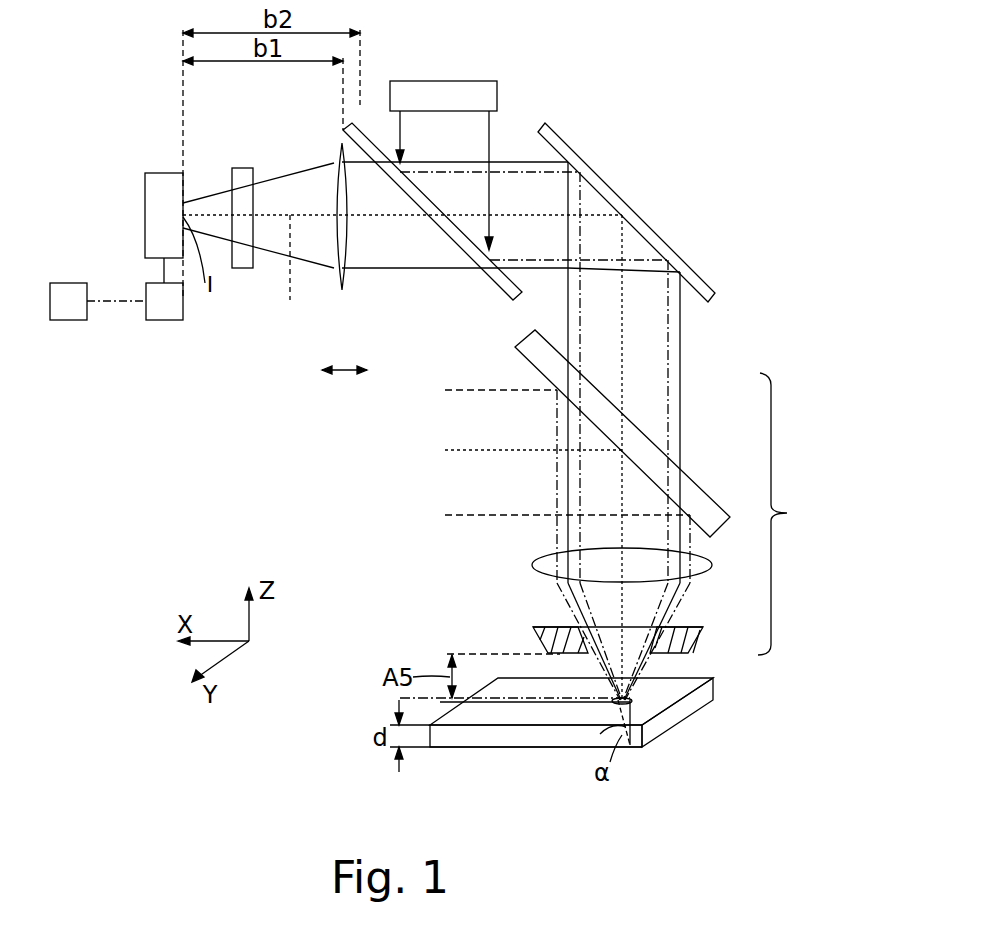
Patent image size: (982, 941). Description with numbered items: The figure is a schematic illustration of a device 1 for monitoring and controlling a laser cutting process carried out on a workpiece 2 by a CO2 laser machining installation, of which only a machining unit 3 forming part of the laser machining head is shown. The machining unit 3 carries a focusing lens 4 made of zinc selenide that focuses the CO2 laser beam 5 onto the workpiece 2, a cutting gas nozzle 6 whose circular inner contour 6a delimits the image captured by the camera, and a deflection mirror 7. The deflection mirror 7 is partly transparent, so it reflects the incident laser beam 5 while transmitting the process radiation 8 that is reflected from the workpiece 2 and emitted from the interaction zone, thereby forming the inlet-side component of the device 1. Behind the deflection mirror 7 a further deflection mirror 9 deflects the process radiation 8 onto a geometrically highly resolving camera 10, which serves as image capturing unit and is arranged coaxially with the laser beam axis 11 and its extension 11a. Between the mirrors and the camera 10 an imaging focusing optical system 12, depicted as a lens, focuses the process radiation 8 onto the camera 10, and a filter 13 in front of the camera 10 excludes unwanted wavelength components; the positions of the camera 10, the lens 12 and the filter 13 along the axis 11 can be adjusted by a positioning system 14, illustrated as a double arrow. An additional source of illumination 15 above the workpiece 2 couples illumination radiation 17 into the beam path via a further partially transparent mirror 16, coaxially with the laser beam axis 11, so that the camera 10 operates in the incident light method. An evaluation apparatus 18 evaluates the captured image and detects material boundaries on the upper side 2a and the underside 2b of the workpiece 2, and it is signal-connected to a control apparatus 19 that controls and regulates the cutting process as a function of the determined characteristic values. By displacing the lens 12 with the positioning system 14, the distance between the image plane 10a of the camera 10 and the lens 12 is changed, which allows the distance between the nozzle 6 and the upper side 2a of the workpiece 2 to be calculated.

The device 1 is at (278, 162).
The workpiece 2 is at (680, 710).
The upper side of the workpiece 2a is at (688, 686).
The underside of the workpiece 2b is at (470, 748).
The machining unit 3 is at (781, 514).
The focusing lens 4 is at (545, 562).
The CO2 laser beam 5 is at (467, 390).
The cutting gas nozzle 6 is at (545, 632).
The circular inner contour of the nozzle 6a is at (668, 608).
The deflection mirror 7 is at (648, 463).
The process radiation 8 is at (683, 370).
The further deflection mirror 9 is at (645, 233).
The camera 10 is at (168, 190).
The image plane of the image capturing apparatus 10a is at (183, 103).
The laser beam axis 11 is at (472, 455).
The extension of the laser beam axis 11a is at (289, 263).
The imaging focusing optical system 12 is at (343, 292).
The filter 13 is at (250, 268).
The positioning system 14 is at (345, 373).
The additional source of illumination 15 is at (447, 95).
The further partially transparent mirror 16 is at (343, 125).
The illumination radiation 17 is at (490, 135).
The evaluation apparatus 18 is at (165, 305).
The control apparatus 19 is at (72, 305).